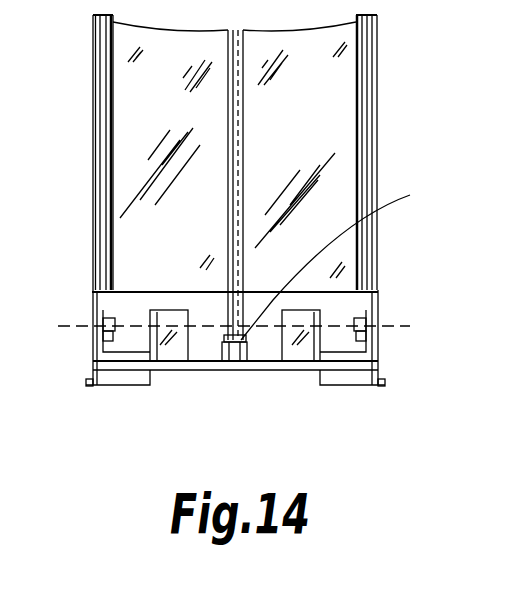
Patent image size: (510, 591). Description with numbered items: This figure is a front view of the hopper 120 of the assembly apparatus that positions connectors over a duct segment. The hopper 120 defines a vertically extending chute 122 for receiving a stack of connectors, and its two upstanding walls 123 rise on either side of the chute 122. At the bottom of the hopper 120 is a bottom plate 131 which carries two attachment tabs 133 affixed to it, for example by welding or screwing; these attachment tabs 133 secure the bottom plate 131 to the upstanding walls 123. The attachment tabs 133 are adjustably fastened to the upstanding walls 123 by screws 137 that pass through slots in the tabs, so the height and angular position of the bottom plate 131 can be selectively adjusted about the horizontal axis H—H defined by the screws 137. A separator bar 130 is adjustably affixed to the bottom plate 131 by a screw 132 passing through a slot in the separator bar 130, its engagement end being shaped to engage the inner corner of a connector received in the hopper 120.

The hopper 120 is at (388, 104).
The chute 122 is at (308, 153).
The upstanding walls 123 is at (92, 310).
The separator bar 130 is at (237, 362).
The bottom plate 131 is at (197, 365).
The screw 132 is at (346, 263).
The attachment tabs 133 is at (128, 358).
The screws 137 is at (118, 306).